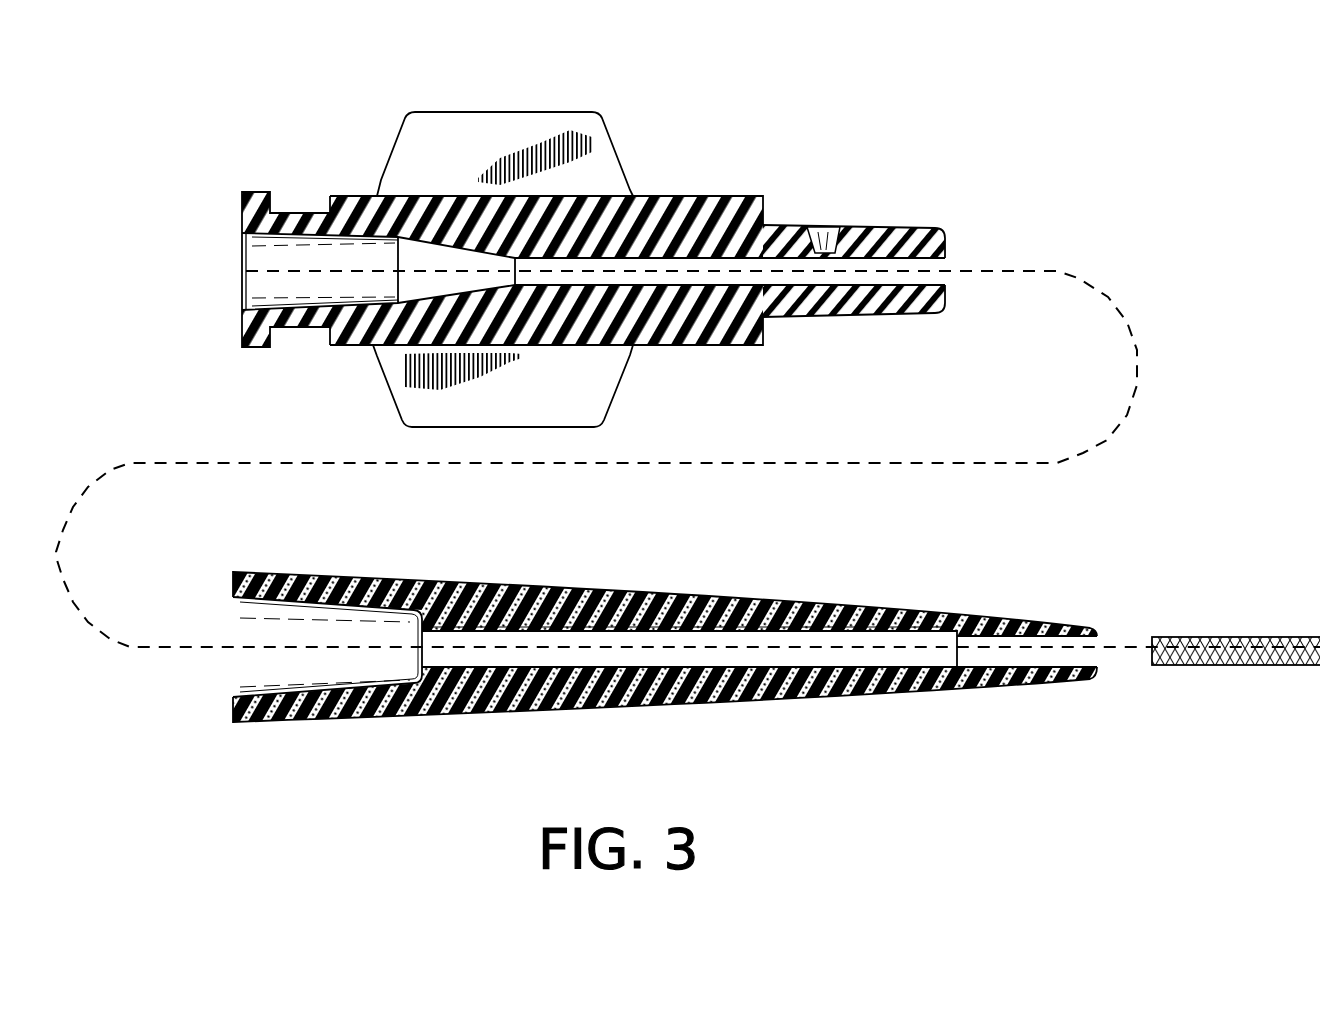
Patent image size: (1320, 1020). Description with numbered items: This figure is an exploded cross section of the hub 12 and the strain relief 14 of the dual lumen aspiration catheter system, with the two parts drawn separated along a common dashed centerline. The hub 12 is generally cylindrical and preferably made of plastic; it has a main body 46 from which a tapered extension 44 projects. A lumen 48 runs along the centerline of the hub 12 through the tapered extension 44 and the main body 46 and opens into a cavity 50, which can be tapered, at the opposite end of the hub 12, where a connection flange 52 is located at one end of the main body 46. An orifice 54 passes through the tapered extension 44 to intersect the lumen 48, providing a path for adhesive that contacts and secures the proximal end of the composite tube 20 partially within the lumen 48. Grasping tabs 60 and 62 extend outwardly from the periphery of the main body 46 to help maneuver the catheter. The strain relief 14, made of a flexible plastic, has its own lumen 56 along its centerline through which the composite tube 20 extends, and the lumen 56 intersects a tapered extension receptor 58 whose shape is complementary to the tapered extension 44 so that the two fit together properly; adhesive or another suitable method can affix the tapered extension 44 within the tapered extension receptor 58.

The hub 12 is at (758, 196).
The strain relief 14 is at (1030, 613).
The composite tube 20 is at (1213, 665).
The tapered extension 44 is at (843, 313).
The main body 46 is at (663, 196).
The lumen 48 is at (938, 263).
The cavity 50 is at (268, 270).
The connection flange 52 is at (255, 191).
The orifice 54 is at (822, 236).
The lumen 56 is at (1080, 643).
The tapered extension receptor 58 is at (247, 668).
The grasping tab 60 is at (410, 153).
The grasping tab 62 is at (425, 393).